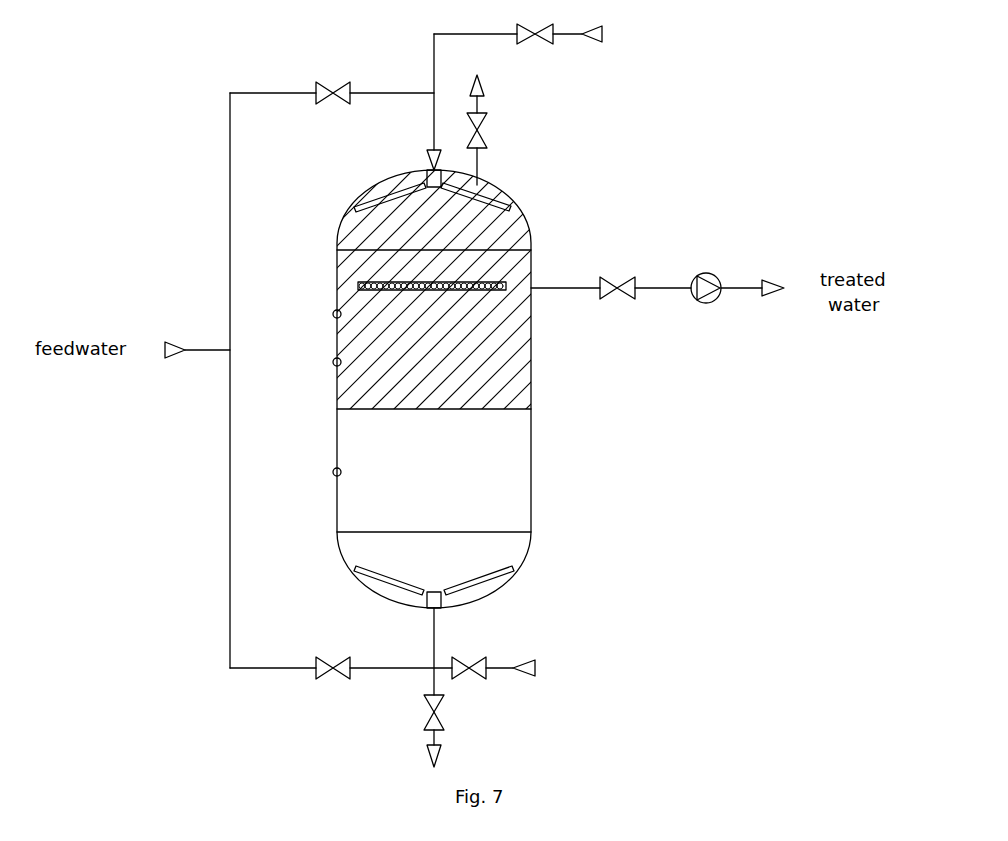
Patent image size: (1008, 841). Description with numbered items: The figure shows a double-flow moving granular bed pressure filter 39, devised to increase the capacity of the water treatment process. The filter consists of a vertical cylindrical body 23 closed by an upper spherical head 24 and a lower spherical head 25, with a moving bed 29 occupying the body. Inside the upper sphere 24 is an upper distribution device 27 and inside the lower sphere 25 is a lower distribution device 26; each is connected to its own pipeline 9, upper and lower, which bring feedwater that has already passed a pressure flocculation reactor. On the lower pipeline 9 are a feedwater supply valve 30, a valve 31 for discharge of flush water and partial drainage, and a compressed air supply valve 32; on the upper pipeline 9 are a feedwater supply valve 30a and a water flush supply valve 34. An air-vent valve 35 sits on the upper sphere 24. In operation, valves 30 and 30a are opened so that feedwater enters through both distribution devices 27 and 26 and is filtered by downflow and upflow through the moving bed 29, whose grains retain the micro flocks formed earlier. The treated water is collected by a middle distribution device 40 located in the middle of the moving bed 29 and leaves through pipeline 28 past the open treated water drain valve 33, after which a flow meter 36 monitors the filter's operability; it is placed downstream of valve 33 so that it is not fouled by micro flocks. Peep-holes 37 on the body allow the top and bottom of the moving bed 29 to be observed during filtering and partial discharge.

The pipeline 9 is at (434, 62).
The vertical cylindrical body 23 is at (566, 429).
The upper spherical head 24 is at (500, 205).
The lower spherical head 25 is at (478, 600).
The lower distribution device 26 is at (398, 588).
The upper distribution device 27 is at (398, 186).
The pipeline 28 is at (553, 288).
The moving bed 29 is at (467, 264).
The valve for supply of the feedwater 30 is at (346, 674).
The valve for supply of the feedwater 30a is at (384, 68).
The valve for discharge of the water flush and partial drainage 31 is at (472, 713).
The valve for compressed air supply 32 is at (483, 662).
The treated water drain valve 33 is at (628, 281).
The valve for supply of the water flush 34 is at (548, 29).
The air-vent valve 35 is at (485, 118).
The flow meter 36 is at (713, 278).
The peep-holes 37 is at (335, 469).
The double-flow pressure filter 39 is at (497, 445).
The middle distribution device 40 is at (505, 292).